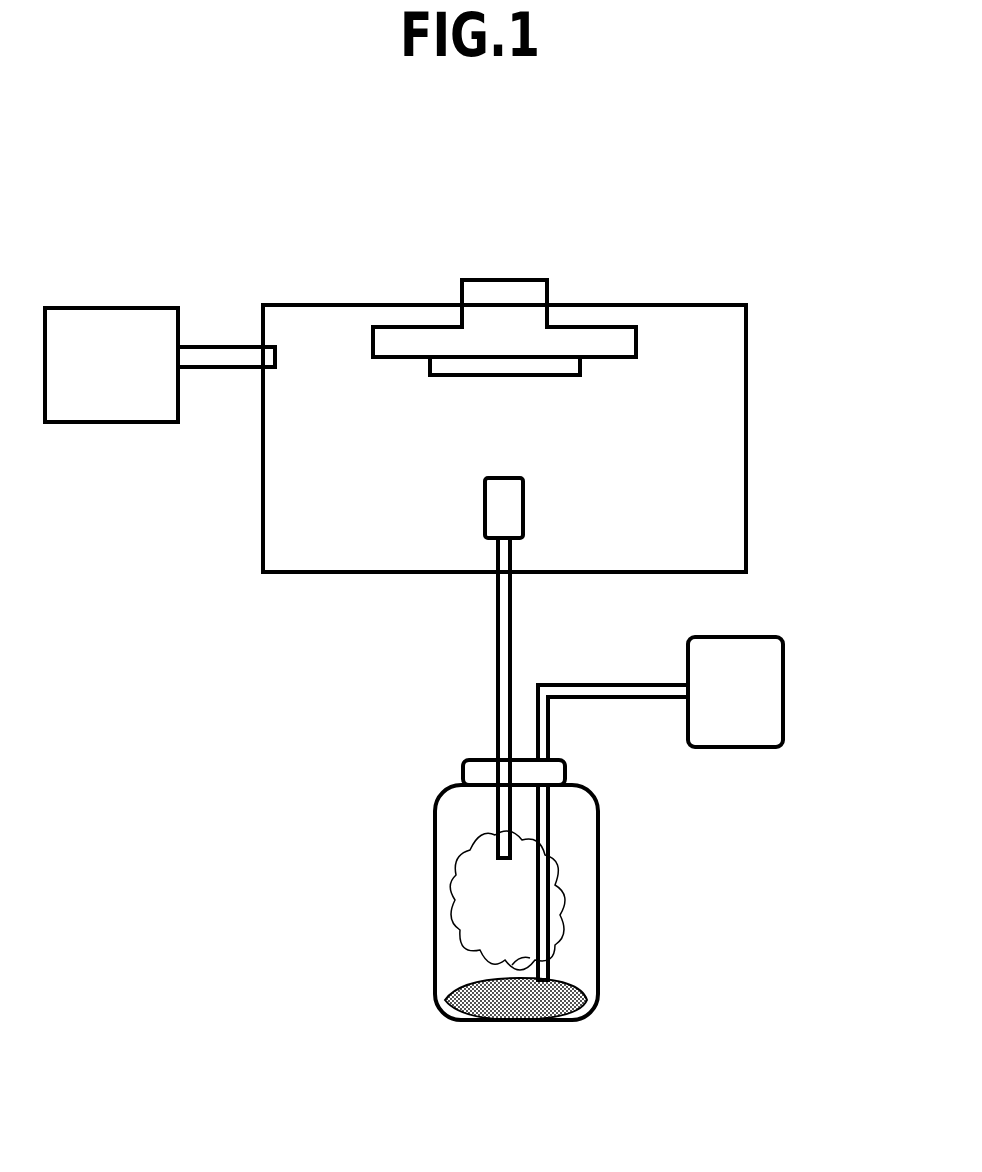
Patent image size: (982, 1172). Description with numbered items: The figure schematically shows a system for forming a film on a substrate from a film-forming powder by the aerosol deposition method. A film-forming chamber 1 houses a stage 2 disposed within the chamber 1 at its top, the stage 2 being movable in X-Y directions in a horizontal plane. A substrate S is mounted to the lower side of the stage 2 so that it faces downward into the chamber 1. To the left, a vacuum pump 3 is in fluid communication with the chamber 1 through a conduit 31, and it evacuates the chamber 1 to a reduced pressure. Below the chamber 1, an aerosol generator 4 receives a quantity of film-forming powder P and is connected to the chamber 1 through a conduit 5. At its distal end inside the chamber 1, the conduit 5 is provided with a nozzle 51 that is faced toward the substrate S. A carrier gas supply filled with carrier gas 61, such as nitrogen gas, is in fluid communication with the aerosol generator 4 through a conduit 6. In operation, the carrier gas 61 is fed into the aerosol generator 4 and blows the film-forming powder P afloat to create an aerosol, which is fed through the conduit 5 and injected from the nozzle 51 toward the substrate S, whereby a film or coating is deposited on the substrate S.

The film-forming chamber 1 is at (690, 336).
The stage 2 is at (513, 310).
The substrate S is at (533, 367).
The vacuum pump 3 is at (105, 342).
The conduit 31 is at (218, 357).
The aerosol generator 4 is at (577, 888).
The film-forming powder P is at (502, 1007).
The conduit 5 is at (503, 663).
The nozzle 51 is at (503, 513).
The conduit 6 is at (640, 693).
The carrier gas 61 is at (748, 670).